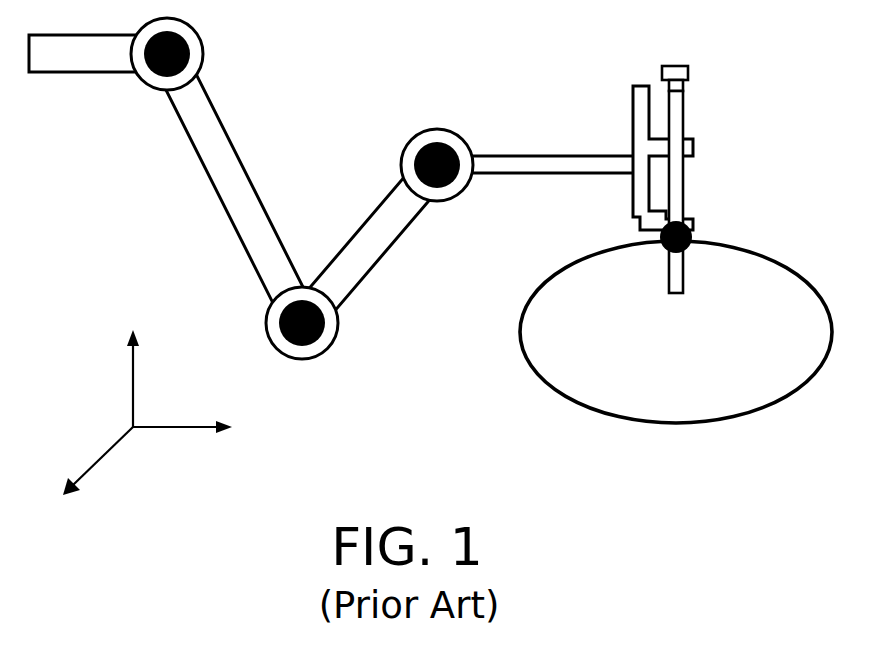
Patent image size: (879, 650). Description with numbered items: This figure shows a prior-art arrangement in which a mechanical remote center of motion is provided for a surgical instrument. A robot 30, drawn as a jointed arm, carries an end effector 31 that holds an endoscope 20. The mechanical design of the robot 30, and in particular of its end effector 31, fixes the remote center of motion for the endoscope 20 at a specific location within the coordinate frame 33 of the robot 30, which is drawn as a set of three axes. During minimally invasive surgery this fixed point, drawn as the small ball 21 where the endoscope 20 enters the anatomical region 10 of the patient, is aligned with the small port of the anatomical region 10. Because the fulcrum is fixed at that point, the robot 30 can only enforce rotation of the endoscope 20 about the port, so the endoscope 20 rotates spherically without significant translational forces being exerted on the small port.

The anatomical region 10 is at (665, 386).
The endoscope 20 is at (692, 120).
The ball joint / pivot point 21 is at (690, 237).
The robot 30 is at (172, 190).
The end effector 31 is at (637, 127).
The coordinate frame 33 is at (99, 406).